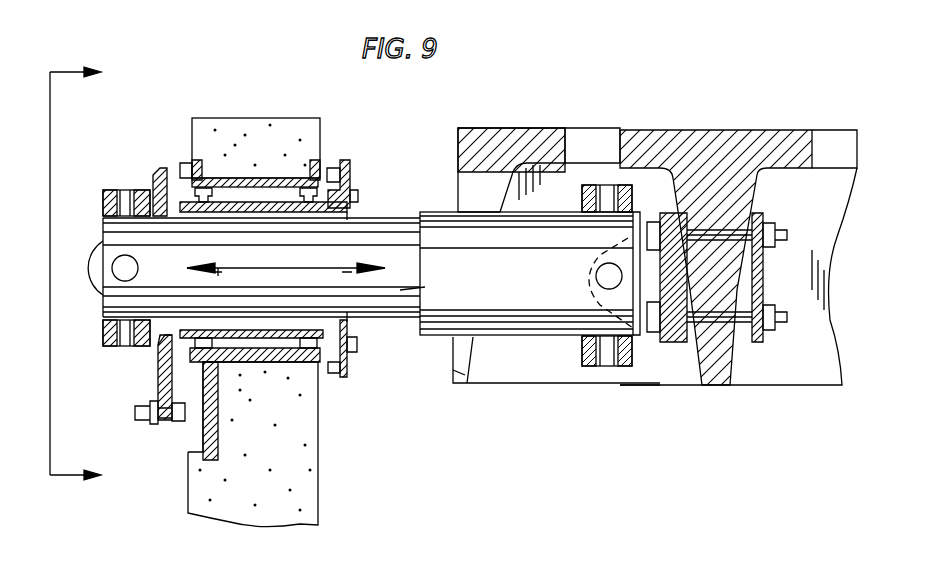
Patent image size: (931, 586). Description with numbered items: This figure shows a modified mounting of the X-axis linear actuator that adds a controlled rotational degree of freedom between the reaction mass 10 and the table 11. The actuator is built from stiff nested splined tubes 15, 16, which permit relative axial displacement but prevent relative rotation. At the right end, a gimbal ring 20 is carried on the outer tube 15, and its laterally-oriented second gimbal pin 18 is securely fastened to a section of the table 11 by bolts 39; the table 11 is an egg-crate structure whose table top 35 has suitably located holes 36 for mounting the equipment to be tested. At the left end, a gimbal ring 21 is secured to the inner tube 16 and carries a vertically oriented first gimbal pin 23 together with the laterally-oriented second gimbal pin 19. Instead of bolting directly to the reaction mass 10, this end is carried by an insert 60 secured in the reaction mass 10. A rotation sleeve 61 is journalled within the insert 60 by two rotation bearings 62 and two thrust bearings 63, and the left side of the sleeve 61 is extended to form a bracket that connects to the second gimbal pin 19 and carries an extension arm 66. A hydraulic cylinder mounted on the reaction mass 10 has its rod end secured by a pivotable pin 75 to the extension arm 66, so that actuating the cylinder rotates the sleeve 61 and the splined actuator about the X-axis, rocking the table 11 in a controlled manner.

The reaction mass 10 is at (358, 462).
The table 11 is at (765, 150).
The outer splined tube 15 is at (520, 273).
The inner splined tube 16 is at (325, 245).
The second gimbal pin 18 is at (600, 272).
The second gimbal pin 19 is at (122, 270).
The gimbal ring 20 is at (632, 382).
The gimbal ring 21 is at (106, 348).
The first gimbal pin 23 is at (128, 192).
The table top 35 is at (700, 150).
The holes 36 is at (586, 130).
The bolts 39 is at (745, 320).
The insert 60 is at (302, 170).
The rotation sleeve 61 is at (350, 165).
The rotation bearings 62 is at (198, 130).
The thrust bearings 63 is at (183, 170).
The extension arm 66 is at (160, 400).
The pivotable pin 75 is at (155, 420).